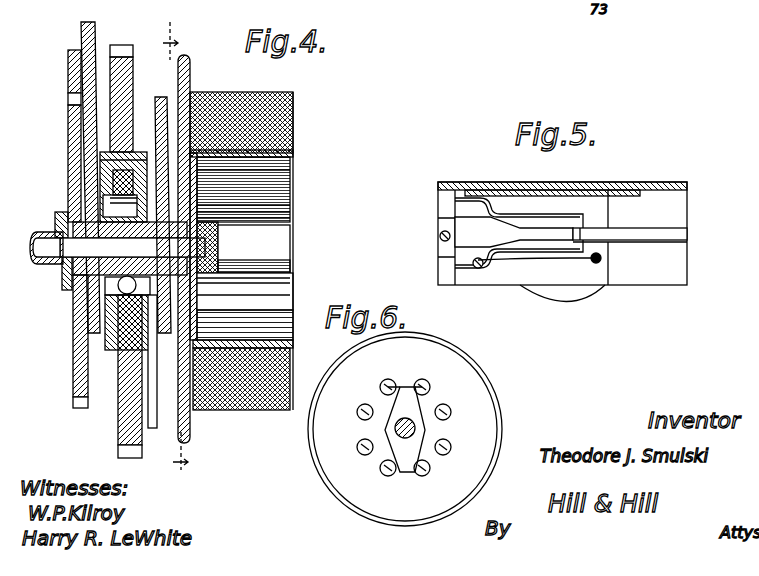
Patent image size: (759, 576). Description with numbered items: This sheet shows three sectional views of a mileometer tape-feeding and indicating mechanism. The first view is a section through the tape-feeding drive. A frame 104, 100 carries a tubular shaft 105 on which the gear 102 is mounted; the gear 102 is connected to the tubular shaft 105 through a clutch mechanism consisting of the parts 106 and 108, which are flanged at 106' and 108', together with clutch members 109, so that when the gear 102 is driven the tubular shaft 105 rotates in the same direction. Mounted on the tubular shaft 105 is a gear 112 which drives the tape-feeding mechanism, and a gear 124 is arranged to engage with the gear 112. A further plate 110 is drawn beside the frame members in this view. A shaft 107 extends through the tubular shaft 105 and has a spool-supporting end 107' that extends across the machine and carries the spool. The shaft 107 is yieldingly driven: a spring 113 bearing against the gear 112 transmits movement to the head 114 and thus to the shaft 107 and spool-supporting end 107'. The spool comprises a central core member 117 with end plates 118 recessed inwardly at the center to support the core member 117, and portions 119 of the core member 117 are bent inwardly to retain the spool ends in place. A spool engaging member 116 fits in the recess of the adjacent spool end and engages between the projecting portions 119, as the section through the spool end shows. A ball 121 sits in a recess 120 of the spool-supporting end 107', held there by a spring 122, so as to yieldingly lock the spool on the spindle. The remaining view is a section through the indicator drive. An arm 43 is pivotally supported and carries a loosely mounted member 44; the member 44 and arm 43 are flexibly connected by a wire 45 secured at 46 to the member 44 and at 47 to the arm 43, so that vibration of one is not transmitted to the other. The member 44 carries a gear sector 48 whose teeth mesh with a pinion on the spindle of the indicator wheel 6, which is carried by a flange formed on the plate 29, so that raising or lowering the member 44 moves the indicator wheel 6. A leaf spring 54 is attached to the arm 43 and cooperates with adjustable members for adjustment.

In FIG. 4, the frame 104 is at (83, 30).
In FIG. 4, the gear 124 is at (70, 54).
In FIG. 4, the gear 112 is at (75, 360).
In FIG. 4, the clutch part 106 is at (87, 133).
In FIG. 4, the flange 106' is at (80, 182).
In FIG. 4, the flange 108' is at (87, 160).
In FIG. 4, the shaft 107 is at (103, 261).
In FIG. 6, the shaft 107 is at (373, 429).
In FIG. 4, the spring 113 is at (56, 218).
In FIG. 4, the clutch part 108 is at (132, 247).
In FIG. 4, the head 114 is at (40, 258).
In FIG. 4, the tubular shaft 105 is at (118, 288).
In FIG. 6, the tubular shaft 105 is at (412, 420).
In FIG. 4, the clutch member 109 is at (108, 300).
In FIG. 4, the gear 102 is at (120, 426).
In FIG. 4, the frame 100 is at (160, 98).
In FIG. 4, the plate 110 is at (153, 392).
In FIG. 4, the end plate 118 is at (193, 207).
In FIG. 6, the end plate 118 is at (482, 404).
In FIG. 4, the central core member 117 is at (290, 140).
In FIG. 4, the spool engaging member 116 is at (197, 194).
In FIG. 6, the spool engaging member 116 is at (400, 447).
In FIG. 4, the ball 121 is at (210, 222).
In FIG. 4, the recess 120 is at (212, 246).
In FIG. 4, the spool-supporting end 107' is at (264, 268).
In FIG. 4, the spring 122 is at (204, 282).
In FIG. 4, the portions 119 is at (198, 326).
In FIG. 6, the portions 119 is at (452, 428).
In FIG. 4, the indicator wheel 6 is at (174, 251).
In FIG. 5, the plate 29 is at (688, 262).
In FIG. 5, the gear sector 48 is at (630, 190).
In FIG. 5, the arm 43 is at (538, 226).
In FIG. 5, the spring 54 is at (680, 234).
In FIG. 5, the member 44 is at (605, 220).
In FIG. 5, the securing point 46 is at (602, 258).
In FIG. 5, the securing point 47 is at (479, 268).
In FIG. 5, the wire 45 is at (545, 265).